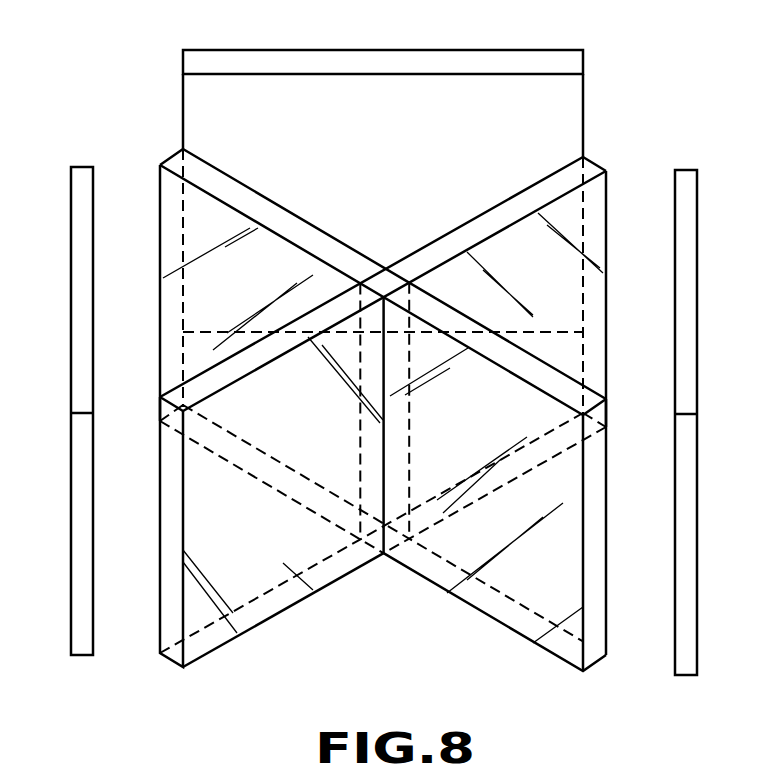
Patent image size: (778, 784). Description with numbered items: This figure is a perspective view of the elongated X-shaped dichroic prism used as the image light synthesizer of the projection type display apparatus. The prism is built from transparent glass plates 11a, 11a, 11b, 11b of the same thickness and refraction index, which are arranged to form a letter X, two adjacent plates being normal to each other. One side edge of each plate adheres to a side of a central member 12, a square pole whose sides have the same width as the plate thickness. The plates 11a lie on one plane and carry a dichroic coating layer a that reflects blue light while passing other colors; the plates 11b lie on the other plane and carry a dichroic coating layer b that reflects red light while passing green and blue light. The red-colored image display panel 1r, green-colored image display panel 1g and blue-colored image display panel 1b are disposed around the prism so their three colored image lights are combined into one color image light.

The green-colored image display panel 1g is at (436, 60).
The red-colored image display panel 1r is at (71, 362).
The blue-colored image display panel 1b is at (697, 340).
The transparent plate 11a is at (606, 168).
The transparent plate 11b is at (160, 150).
The central member 12 is at (389, 278).
The dichroic coating layer a is at (197, 347).
The dichroic coating layer b is at (562, 352).